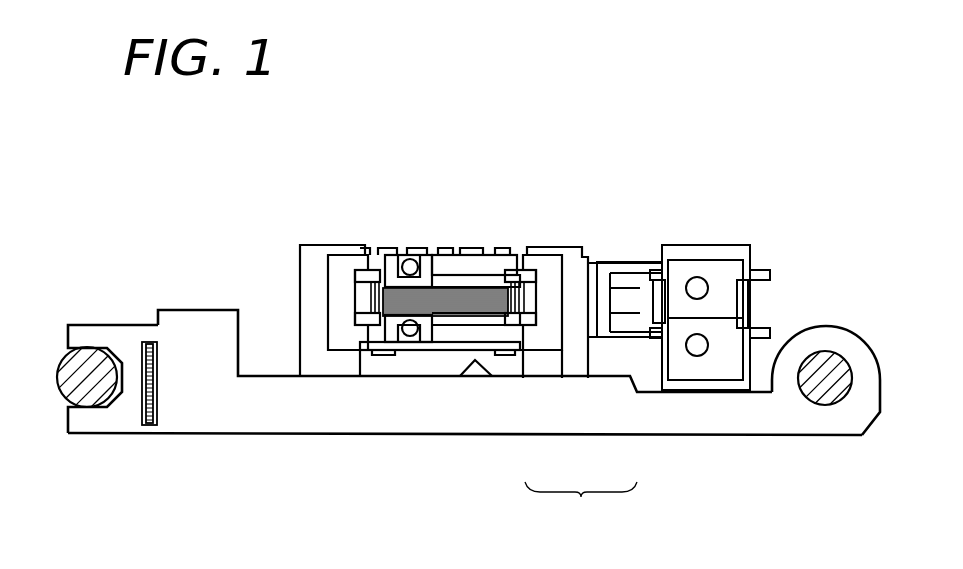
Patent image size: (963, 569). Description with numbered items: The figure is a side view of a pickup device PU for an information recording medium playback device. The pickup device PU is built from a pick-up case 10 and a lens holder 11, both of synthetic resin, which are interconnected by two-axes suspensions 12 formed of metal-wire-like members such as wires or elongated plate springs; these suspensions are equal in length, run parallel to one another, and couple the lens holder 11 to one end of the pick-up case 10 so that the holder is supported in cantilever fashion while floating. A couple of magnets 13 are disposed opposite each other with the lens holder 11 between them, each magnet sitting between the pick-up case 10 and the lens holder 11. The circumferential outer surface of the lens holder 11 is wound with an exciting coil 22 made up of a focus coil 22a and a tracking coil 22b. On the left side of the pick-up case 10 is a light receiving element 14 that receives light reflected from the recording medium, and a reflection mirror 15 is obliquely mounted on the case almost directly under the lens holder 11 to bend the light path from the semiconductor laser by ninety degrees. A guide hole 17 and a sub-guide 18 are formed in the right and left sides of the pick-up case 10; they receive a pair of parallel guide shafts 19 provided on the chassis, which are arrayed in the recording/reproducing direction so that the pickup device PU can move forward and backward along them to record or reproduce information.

The pickup device PU is at (270, 243).
The pick-up case 10 is at (258, 423).
The lens holder 11 is at (473, 260).
The 2-axes suspensions 12 is at (578, 262).
The magnets 13 is at (340, 253).
The light receiving element 14 is at (142, 410).
The reflection mirror 15 is at (475, 368).
The guide hole 17 is at (822, 407).
The sub-guide 18 is at (88, 335).
The guide shafts 19 is at (58, 391).
The exciting coil 22 is at (581, 504).
The focus coil 22a is at (495, 318).
The tracking coil 22b is at (527, 318).